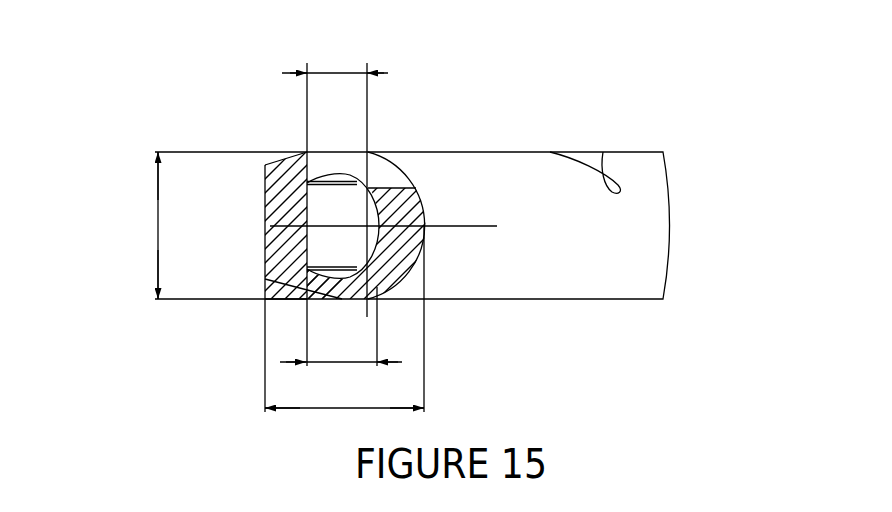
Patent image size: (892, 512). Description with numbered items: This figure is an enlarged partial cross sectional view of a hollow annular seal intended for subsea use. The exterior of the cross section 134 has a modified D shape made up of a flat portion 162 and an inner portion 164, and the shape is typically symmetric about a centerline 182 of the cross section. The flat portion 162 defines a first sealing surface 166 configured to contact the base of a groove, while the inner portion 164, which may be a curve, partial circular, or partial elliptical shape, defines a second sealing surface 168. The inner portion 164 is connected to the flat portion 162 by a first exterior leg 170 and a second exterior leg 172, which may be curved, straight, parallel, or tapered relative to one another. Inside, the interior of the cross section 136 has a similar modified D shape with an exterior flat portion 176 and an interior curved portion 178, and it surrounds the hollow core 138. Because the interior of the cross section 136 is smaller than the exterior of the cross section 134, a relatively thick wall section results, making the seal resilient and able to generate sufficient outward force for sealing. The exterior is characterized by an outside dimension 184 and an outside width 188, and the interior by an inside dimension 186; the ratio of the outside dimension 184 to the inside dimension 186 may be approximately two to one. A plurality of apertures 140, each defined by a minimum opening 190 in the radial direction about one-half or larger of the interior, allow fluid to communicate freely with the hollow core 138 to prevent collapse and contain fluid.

The exterior of the cross section 134 is at (197, 331).
The interior of the cross section 136 is at (215, 296).
The hollow core 138 is at (222, 171).
The plurality of apertures 140 is at (537, 124).
The flat portion 162 is at (176, 263).
The inner portion 164 is at (387, 198).
The first sealing surface 166 is at (262, 222).
The second sealing surface 168 is at (441, 251).
The first exterior leg 170 is at (197, 97).
The second exterior leg 172 is at (299, 282).
The exterior flat portion 176 is at (197, 214).
The interior curved portion 178 is at (407, 262).
The centerline 182 is at (442, 288).
The outside dimension 184 is at (344, 319).
The inside dimension 186 is at (341, 326).
The outside width 188 is at (131, 225).
The minimum opening 190 is at (335, 182).